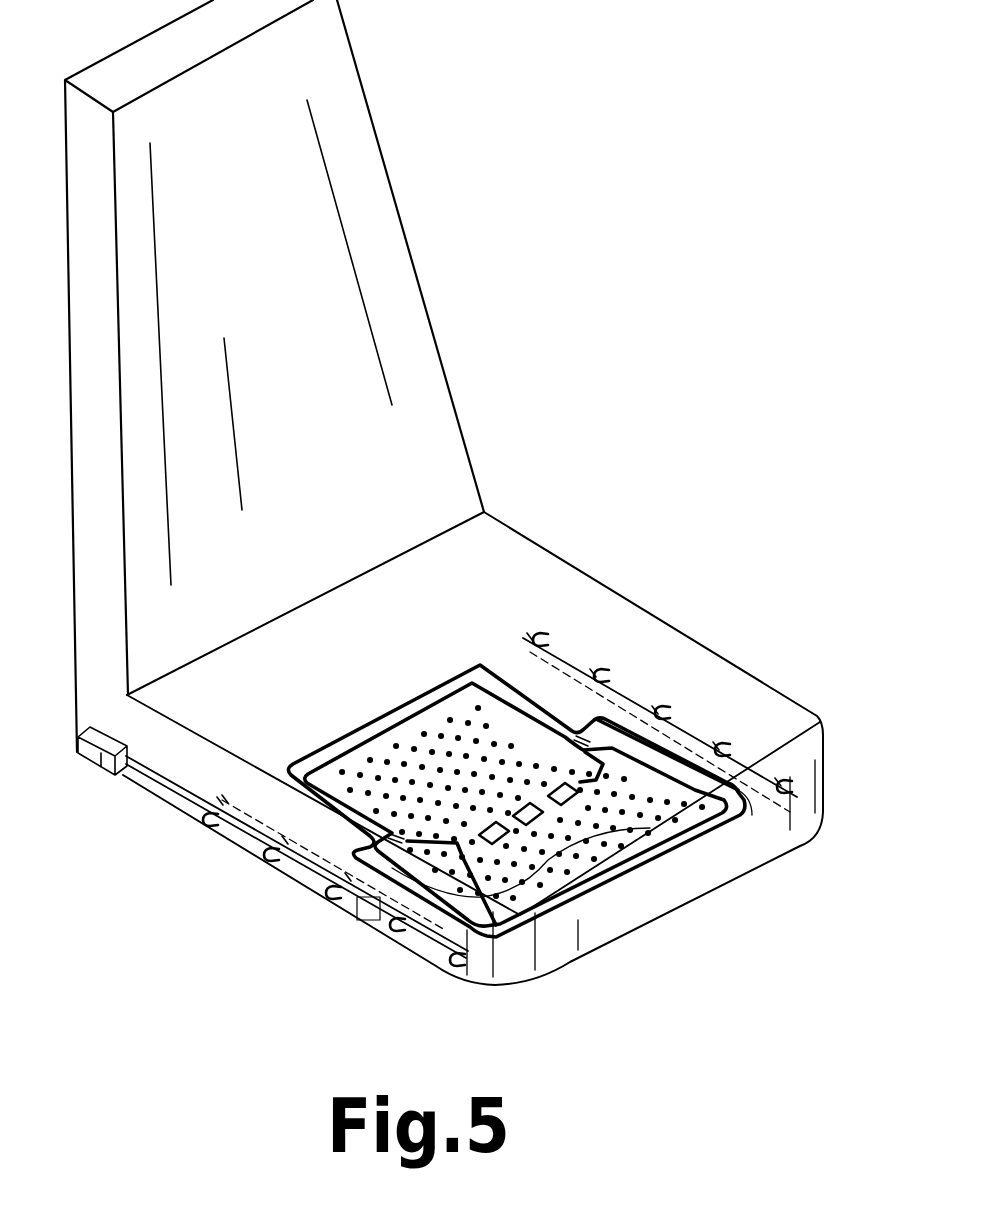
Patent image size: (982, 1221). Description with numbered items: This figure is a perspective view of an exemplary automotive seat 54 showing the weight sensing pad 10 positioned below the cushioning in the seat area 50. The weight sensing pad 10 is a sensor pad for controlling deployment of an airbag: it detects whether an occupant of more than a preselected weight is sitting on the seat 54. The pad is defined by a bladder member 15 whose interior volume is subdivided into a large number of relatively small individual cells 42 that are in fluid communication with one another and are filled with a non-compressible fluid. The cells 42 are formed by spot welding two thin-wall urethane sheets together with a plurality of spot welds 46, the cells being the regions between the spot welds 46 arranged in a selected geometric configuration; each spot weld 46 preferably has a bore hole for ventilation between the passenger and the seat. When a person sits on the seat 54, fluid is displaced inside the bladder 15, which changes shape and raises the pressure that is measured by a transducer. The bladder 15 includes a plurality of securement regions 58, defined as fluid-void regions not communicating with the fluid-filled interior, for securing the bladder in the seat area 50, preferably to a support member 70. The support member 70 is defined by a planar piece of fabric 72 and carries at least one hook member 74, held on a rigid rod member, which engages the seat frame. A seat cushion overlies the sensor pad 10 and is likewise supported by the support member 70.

The weight sensing pad 10 is at (610, 648).
The bladder member 15 is at (490, 675).
The individual cells 42 is at (473, 713).
The spot welds 46 is at (652, 825).
The seat area 50 is at (247, 740).
The seat 54 is at (437, 332).
The securement regions 58 is at (333, 890).
The support member 70 is at (482, 663).
The planar piece of fabric 72 is at (585, 705).
The hook member 74 is at (253, 853).